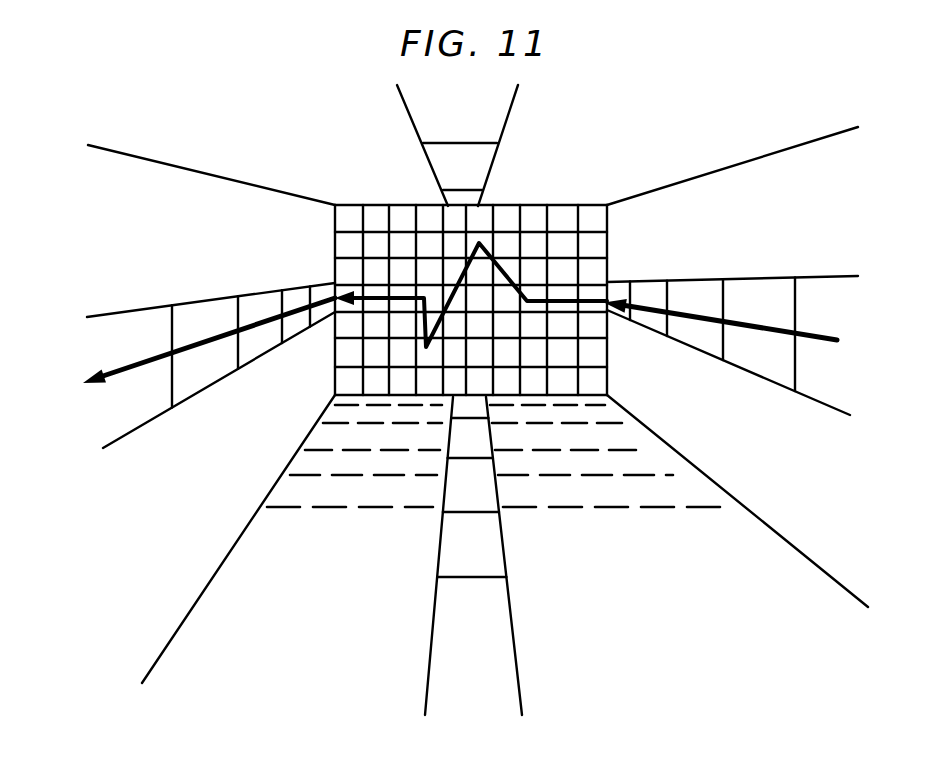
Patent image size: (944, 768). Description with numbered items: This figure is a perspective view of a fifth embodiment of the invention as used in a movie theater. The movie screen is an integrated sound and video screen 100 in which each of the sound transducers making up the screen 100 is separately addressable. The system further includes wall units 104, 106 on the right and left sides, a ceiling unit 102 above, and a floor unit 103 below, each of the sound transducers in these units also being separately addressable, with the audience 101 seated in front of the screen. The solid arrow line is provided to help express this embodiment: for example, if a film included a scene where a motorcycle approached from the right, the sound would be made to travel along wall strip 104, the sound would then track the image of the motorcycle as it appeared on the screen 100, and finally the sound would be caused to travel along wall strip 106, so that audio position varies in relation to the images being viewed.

The integrated sound and video screen 100 is at (543, 213).
The audience 101 is at (390, 507).
The ceiling unit 102 is at (475, 160).
The floor unit 103 is at (488, 548).
The wall unit 104 is at (712, 287).
The wall unit 106 is at (208, 312).